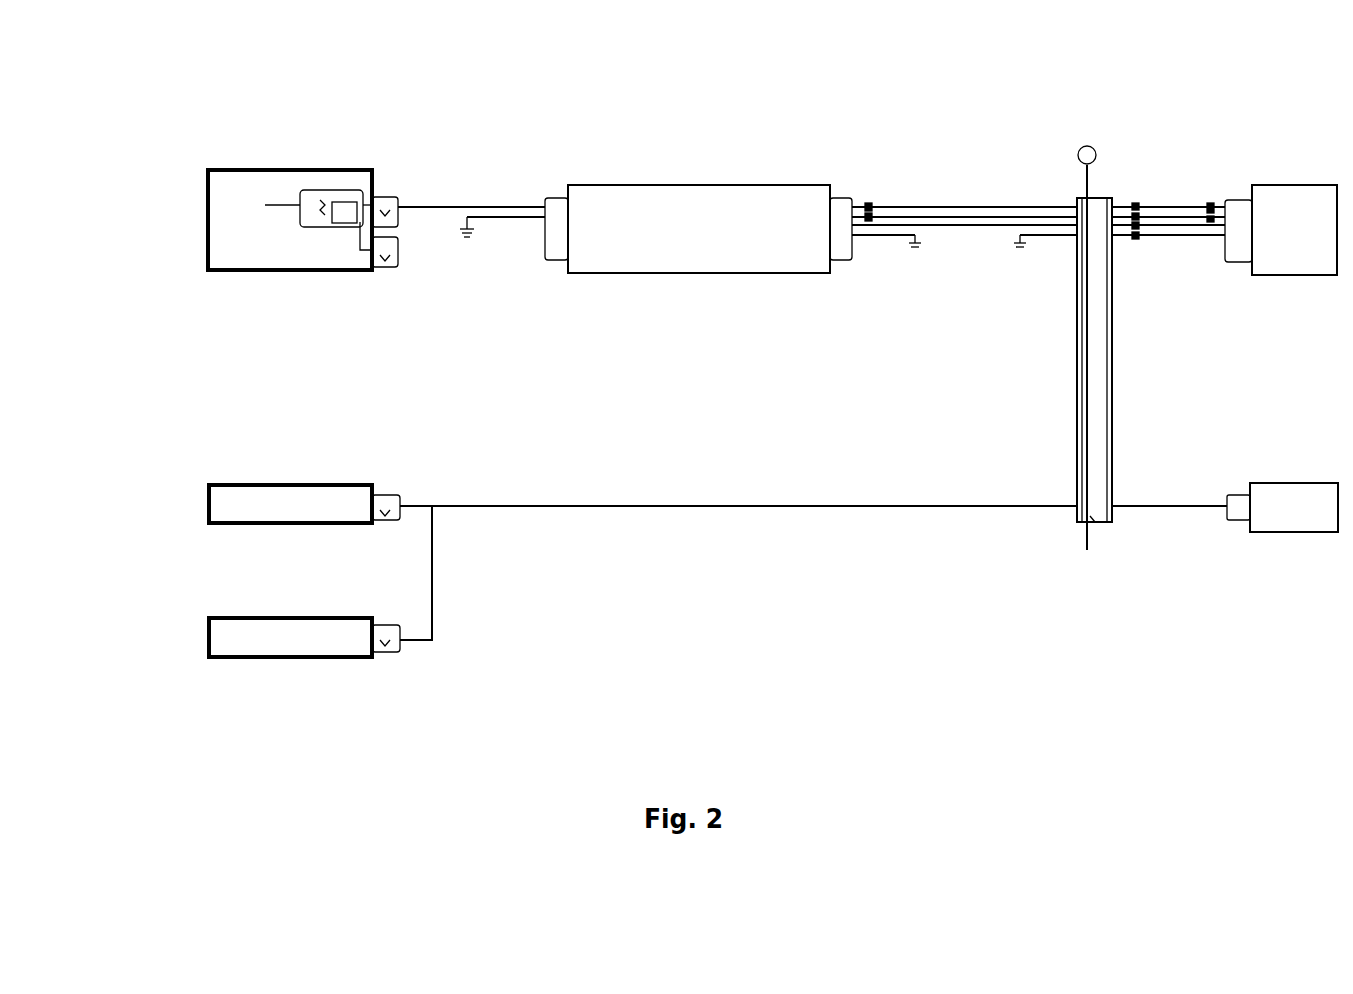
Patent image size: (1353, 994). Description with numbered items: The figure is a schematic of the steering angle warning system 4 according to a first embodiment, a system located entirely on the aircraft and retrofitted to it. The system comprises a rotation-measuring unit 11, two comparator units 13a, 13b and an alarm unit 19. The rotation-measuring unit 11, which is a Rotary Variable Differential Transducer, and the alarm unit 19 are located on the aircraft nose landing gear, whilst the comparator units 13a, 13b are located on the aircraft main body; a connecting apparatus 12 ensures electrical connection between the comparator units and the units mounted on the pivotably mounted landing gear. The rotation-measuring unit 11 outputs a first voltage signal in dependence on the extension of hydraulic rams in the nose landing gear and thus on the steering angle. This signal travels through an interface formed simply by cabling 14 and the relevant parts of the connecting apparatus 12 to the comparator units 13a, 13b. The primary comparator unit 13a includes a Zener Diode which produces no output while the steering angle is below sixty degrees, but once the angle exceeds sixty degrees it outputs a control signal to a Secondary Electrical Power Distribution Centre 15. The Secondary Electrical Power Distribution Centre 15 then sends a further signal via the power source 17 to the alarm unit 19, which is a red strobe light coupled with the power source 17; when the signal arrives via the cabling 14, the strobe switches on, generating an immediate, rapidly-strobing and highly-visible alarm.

The steering angle warning system 4 is at (890, 580).
The rotation-measuring unit 11 is at (1306, 521).
The connecting apparatus 12 is at (1078, 400).
The primary comparator unit 13a is at (218, 482).
The comparator unit 13b is at (218, 612).
The cabling 14 is at (880, 238).
The Secondary Electrical Power Distribution Centre 15 is at (242, 190).
The power source 17 is at (635, 187).
The alarm unit 19 is at (1314, 238).